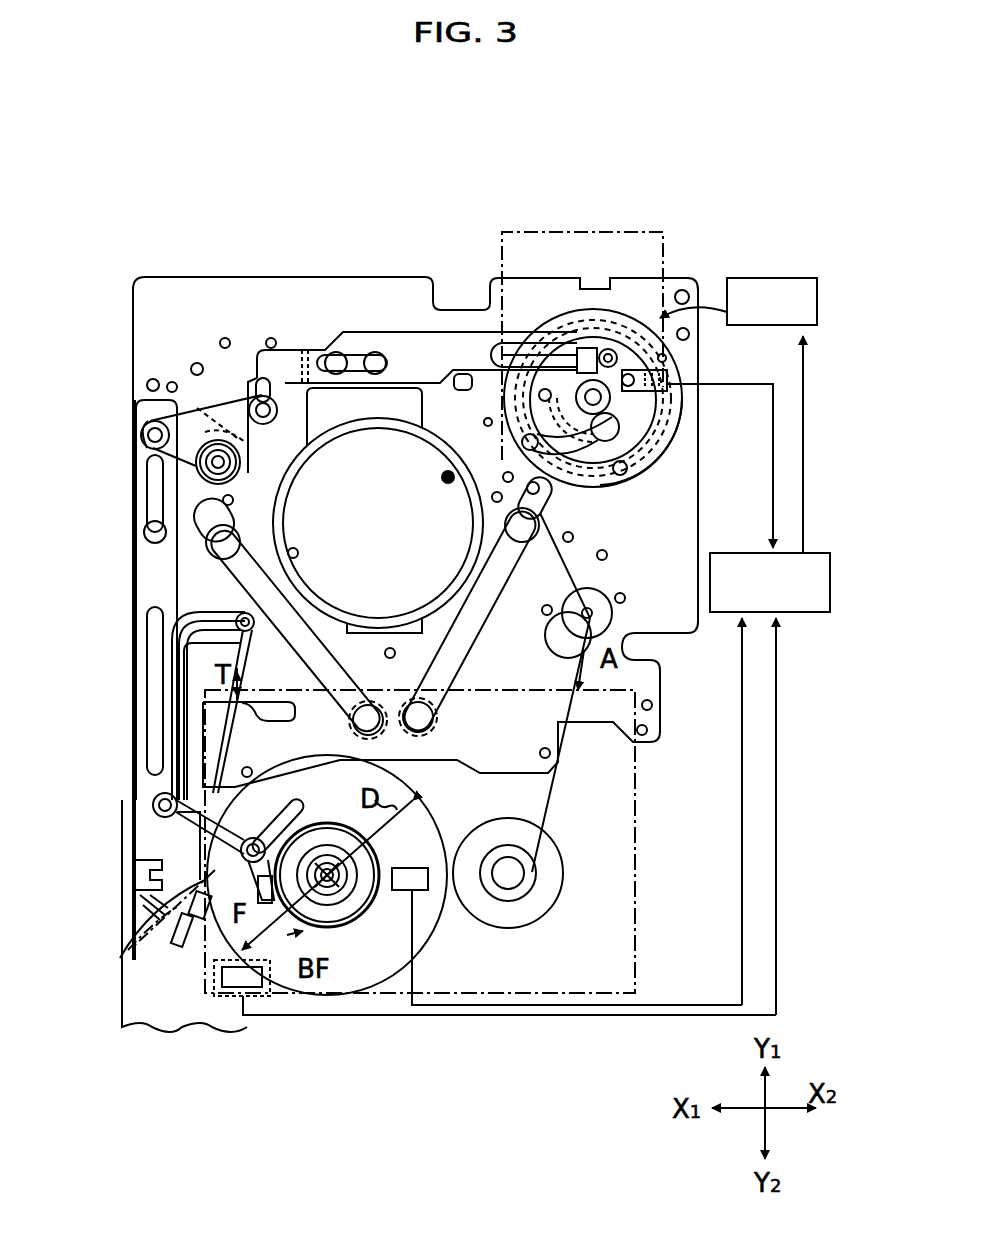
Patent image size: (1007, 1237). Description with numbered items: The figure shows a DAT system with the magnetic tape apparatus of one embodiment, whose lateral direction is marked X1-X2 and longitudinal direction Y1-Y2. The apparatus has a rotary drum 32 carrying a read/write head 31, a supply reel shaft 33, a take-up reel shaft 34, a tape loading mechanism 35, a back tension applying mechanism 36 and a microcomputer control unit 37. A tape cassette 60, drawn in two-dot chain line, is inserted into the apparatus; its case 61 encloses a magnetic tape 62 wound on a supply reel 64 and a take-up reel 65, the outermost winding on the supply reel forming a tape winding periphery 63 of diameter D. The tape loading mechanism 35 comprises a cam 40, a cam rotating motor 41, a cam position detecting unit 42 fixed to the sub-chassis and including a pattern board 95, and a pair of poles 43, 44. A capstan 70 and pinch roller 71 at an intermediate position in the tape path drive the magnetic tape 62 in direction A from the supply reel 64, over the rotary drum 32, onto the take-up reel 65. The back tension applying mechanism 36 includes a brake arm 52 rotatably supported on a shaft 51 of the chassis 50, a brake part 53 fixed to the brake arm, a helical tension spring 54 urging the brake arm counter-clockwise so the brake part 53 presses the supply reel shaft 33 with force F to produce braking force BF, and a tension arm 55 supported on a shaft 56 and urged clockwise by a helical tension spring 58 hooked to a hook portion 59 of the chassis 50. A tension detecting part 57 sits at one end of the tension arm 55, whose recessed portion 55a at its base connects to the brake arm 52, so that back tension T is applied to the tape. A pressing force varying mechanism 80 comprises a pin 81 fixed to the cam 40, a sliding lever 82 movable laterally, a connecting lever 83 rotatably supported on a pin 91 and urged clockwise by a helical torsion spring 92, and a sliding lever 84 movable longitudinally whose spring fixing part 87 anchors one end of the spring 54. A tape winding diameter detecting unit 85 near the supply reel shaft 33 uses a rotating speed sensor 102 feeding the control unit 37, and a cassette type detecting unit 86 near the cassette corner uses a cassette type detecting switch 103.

The read/write head 31 is at (298, 553).
The rotary drum 32 is at (353, 428).
The supply reel shaft 33 is at (358, 907).
The take-up reel shaft 34 is at (548, 922).
The tape loading mechanism 35 is at (653, 303).
The back tension applying mechanism 36 is at (213, 797).
The control unit 37 is at (735, 553).
The cam 40 is at (592, 342).
The cam rotating motor 41 is at (790, 278).
The cam position detecting unit 42 is at (664, 457).
The pole 43 is at (236, 536).
The pole 44 is at (529, 534).
The chassis 50 is at (174, 1027).
The shaft 51 is at (258, 838).
The brake arm 52 is at (233, 848).
The brake part 53 is at (288, 1010).
The helical tension spring 54 is at (130, 948).
The tension arm 55 is at (146, 702).
The recessed portion 55a is at (159, 821).
The shaft 56 is at (151, 798).
The tension detecting part 57 is at (235, 605).
The helical tension spring 58 is at (136, 874).
The hook portion 59 is at (130, 908).
The tape cassette 60 is at (643, 752).
The case 61 is at (635, 915).
The magnetic tape 62 is at (288, 717).
The tape winding periphery 63 is at (438, 928).
The supply reel 64 is at (306, 914).
The take-up reel 65 is at (531, 885).
The capstan 70 is at (598, 599).
The pinch roller 71 is at (555, 640).
The pressing force varying mechanism 80 is at (130, 760).
The pin 81 is at (609, 350).
The sliding lever 82 is at (400, 335).
The connecting lever 83 is at (206, 401).
The sliding lever 84 is at (134, 644).
The tape winding diameter detecting unit 85 is at (426, 858).
The cassette type detecting unit 86 is at (233, 996).
The spring fixing part 87 is at (148, 928).
The pin 91 is at (240, 466).
The helical torsion spring 92 is at (258, 438).
The pattern board 95 is at (582, 230).
The rotating speed sensor 102 is at (410, 866).
The cassette type detecting switch 103 is at (227, 1000).